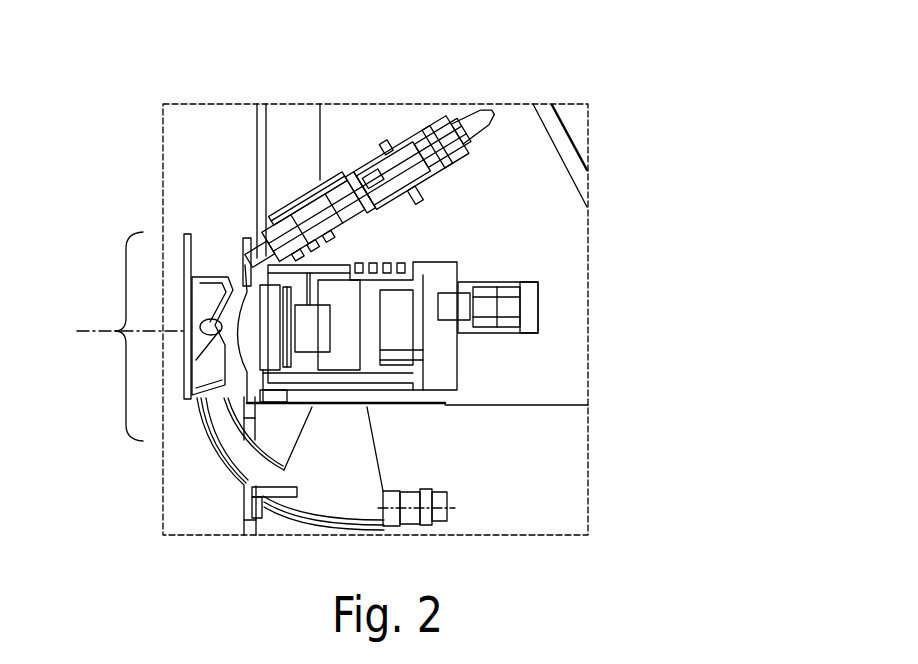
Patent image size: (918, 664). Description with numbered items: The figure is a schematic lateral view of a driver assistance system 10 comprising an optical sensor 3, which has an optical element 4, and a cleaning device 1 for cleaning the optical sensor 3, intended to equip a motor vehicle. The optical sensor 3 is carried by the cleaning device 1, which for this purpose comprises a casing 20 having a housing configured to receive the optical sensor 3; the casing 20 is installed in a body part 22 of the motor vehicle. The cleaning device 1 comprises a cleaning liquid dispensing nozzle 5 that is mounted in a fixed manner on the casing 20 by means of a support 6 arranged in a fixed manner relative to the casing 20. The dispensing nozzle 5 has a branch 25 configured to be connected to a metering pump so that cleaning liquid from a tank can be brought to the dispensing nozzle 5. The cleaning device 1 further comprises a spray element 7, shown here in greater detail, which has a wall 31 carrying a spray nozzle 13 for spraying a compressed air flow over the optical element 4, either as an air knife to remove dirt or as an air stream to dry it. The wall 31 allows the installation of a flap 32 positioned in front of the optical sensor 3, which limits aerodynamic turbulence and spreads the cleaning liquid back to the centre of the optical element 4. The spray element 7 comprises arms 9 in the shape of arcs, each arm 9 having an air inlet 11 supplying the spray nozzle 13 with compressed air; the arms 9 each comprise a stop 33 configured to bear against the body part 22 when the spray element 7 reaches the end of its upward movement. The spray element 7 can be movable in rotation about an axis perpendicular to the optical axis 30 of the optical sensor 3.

The cleaning device 1 is at (119, 333).
The optical sensor 3 is at (423, 393).
The optical element 4 is at (198, 429).
The cleaning liquid dispensing nozzle 5 is at (353, 178).
The support 6 is at (285, 200).
The spray element 7 is at (192, 397).
The arms 9 is at (342, 483).
The driver assistance system 10 is at (632, 58).
The air inlet 11 is at (450, 513).
The spray nozzle 13 is at (190, 286).
The casing 20 is at (236, 398).
The body part 22 is at (257, 168).
The branch 25 is at (485, 108).
The optical axis 30 is at (83, 335).
The wall 31 is at (235, 455).
The flap 32 is at (190, 296).
The stop 33 is at (245, 517).